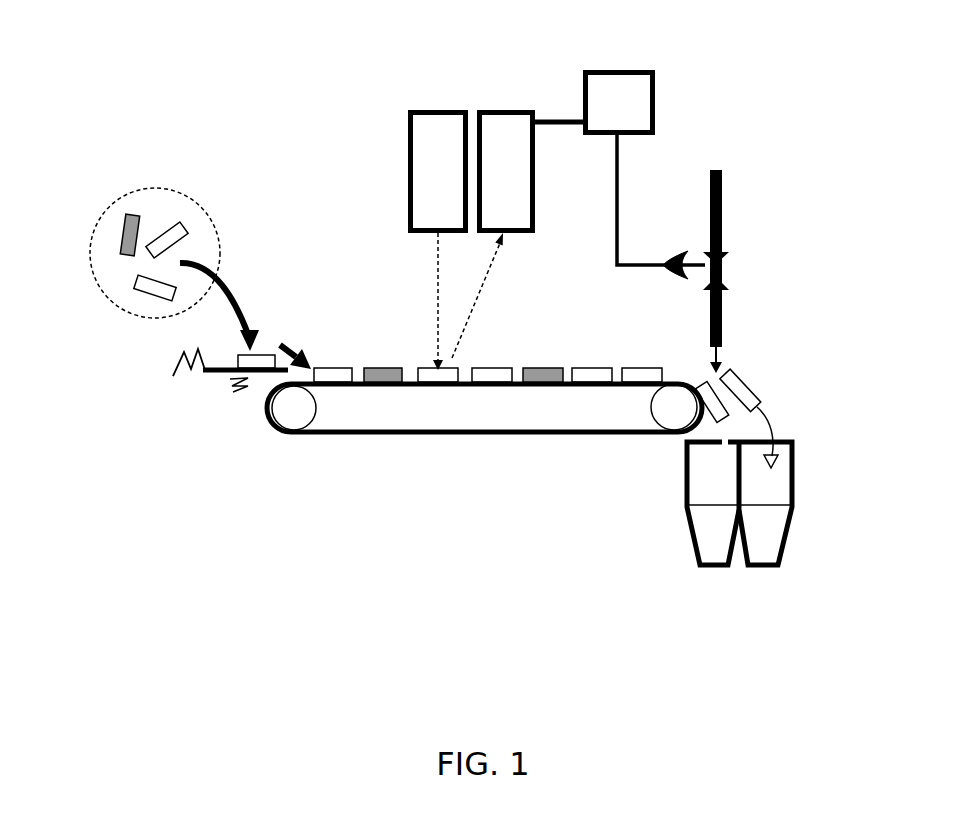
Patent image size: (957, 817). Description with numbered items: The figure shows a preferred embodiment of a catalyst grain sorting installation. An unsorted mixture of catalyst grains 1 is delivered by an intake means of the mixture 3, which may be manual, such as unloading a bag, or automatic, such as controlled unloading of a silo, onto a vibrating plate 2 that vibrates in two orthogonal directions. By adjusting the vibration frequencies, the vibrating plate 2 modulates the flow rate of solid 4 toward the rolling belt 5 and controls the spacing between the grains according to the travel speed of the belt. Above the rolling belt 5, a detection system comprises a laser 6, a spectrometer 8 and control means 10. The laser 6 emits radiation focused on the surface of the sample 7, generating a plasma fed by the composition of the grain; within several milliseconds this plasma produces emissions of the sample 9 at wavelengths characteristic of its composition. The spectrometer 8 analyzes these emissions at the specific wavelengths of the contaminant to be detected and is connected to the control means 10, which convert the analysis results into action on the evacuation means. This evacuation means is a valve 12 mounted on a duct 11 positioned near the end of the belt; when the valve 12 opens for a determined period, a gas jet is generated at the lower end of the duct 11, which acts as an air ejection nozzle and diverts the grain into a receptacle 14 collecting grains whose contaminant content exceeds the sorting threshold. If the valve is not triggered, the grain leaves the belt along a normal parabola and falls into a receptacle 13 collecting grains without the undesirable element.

The unsorted mixture of catalyst grains 1 is at (130, 192).
The vibrating plate 2 is at (205, 375).
The intake means of the mixture 3 is at (245, 307).
The flow rate of solid 4 is at (307, 350).
The rolling belt 5 is at (388, 435).
The laser 6 is at (408, 125).
The surface of the sample 7 is at (438, 330).
The spectrometer 8 is at (497, 112).
The emissions of the sample 9 is at (468, 320).
The control means 10 is at (632, 68).
The duct 11 is at (722, 218).
The valve 12 is at (722, 270).
The receptacle 13 is at (793, 480).
The receptacle 14 is at (685, 475).